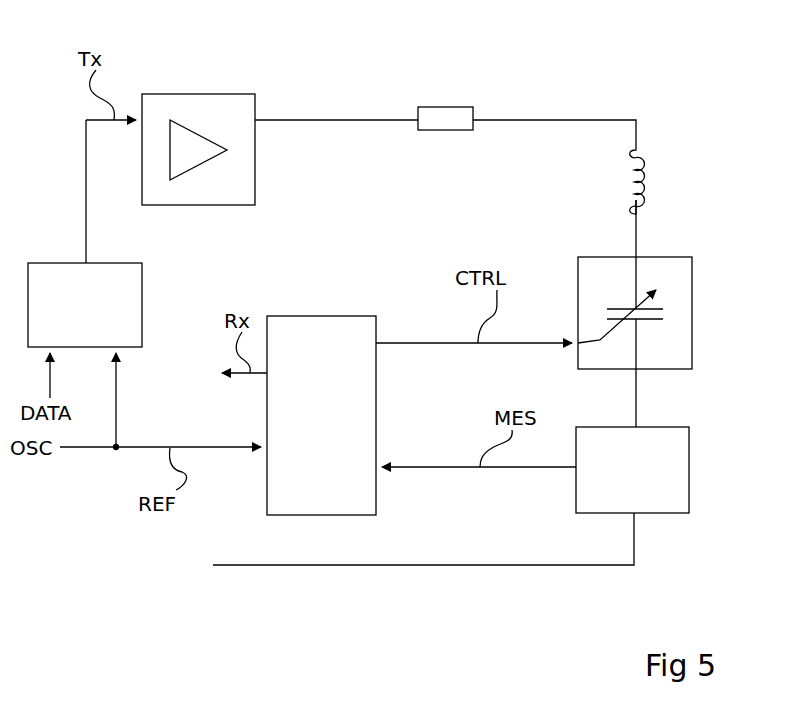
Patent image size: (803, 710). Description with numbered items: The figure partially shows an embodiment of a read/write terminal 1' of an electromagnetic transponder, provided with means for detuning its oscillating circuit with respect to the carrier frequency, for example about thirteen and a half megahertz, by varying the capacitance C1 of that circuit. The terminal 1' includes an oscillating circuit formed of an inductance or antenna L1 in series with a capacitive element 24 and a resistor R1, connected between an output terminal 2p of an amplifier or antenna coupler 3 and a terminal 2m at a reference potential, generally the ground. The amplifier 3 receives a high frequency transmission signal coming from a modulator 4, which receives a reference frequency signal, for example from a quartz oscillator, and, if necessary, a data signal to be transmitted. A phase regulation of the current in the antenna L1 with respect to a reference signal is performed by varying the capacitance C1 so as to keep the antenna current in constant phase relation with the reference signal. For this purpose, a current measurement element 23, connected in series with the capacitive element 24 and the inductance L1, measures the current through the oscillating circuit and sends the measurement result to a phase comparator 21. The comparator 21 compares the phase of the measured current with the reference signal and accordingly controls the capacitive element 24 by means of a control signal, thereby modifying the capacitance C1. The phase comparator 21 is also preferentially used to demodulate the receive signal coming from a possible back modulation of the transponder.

The read/write terminal 1' is at (714, 65).
The amplifier or antenna coupler 3 is at (215, 94).
The output terminal of the amplifier 2p is at (339, 120).
The terminal at a reference potential 2m is at (310, 566).
The modulator 4 is at (142, 278).
The phase comparator circuit 21 is at (312, 316).
The current measurement element 23 is at (689, 460).
The capacitive element 24 is at (675, 313).
The resistor R1 is at (445, 106).
The inductance or antenna L1 is at (653, 180).
The capacitance of the oscillating circuit C1 is at (628, 313).